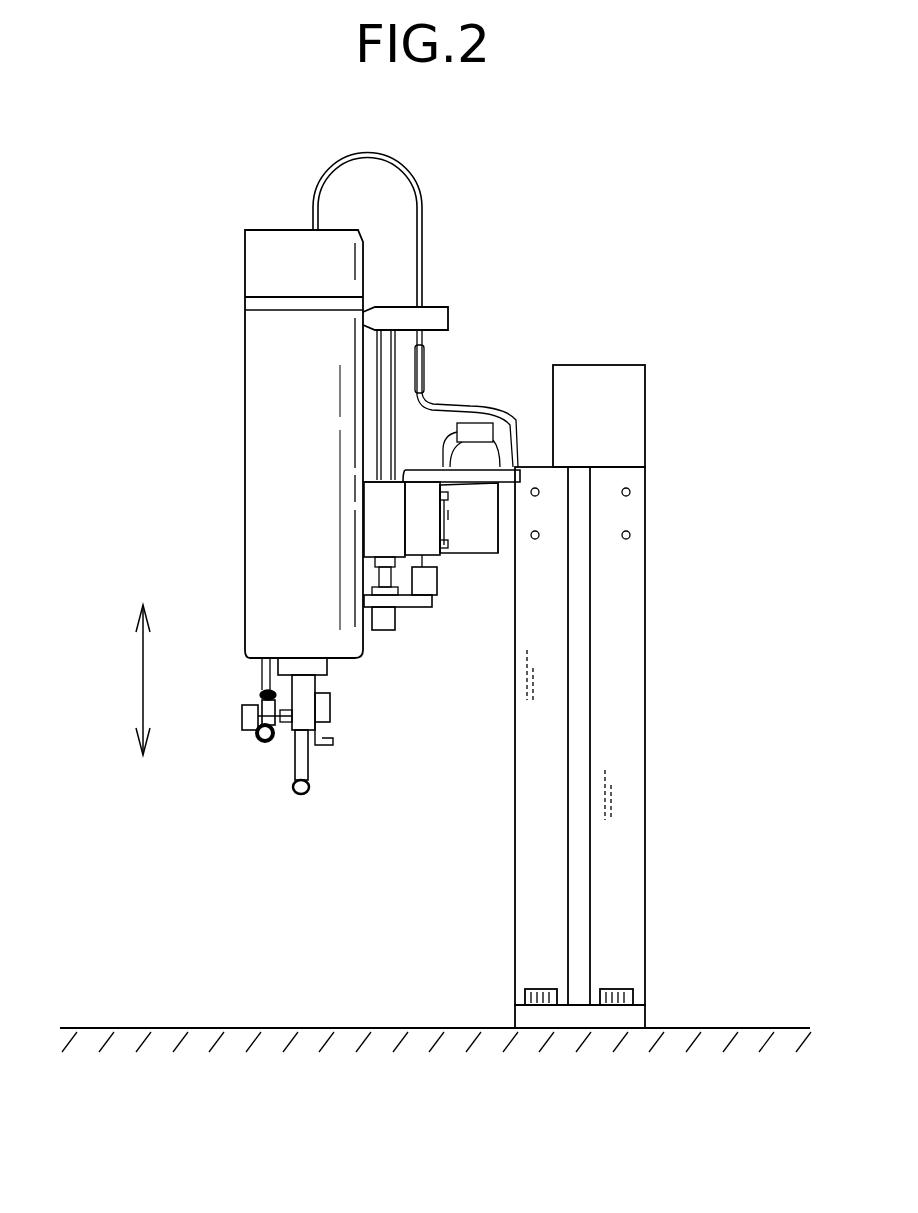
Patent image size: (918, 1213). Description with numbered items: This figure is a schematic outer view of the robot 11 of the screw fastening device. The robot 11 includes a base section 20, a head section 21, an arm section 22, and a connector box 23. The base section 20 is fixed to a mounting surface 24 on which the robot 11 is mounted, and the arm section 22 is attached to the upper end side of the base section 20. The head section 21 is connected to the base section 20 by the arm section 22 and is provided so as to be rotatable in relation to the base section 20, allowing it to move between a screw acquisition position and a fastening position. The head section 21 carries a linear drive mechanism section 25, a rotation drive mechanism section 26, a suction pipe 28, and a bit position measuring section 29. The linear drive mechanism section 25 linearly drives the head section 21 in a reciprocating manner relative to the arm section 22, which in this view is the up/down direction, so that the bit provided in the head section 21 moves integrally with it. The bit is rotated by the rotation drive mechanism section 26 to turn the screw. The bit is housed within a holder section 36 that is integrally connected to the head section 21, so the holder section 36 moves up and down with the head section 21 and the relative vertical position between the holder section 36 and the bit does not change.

The robot 11 is at (587, 283).
The base section 20 is at (647, 647).
The head section 21 is at (232, 361).
The arm section 22 is at (508, 550).
The connector box 23 is at (647, 398).
The mounting surface 24 is at (90, 1027).
The linear drive mechanism section 25 is at (421, 625).
The rotation drive mechanism section 26 is at (268, 480).
The suction pipe 28 is at (310, 775).
The bit position measuring section 29 is at (350, 728).
The holder section 36 is at (316, 687).